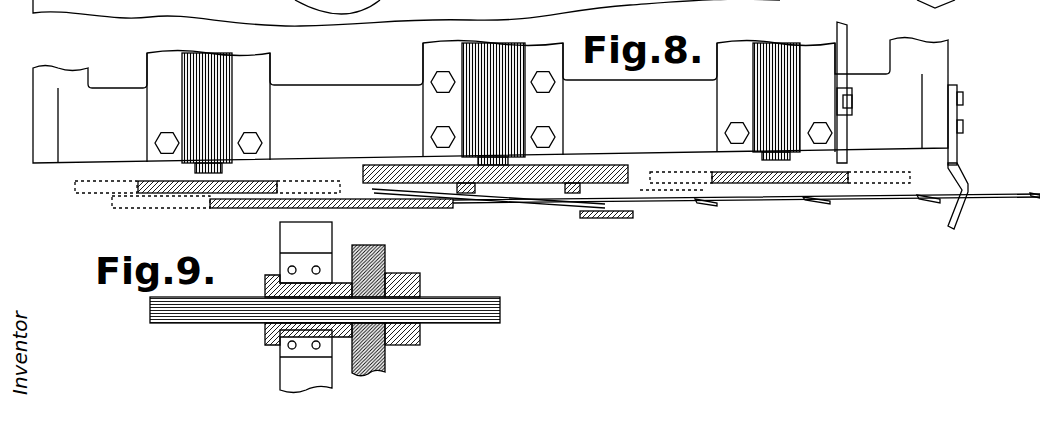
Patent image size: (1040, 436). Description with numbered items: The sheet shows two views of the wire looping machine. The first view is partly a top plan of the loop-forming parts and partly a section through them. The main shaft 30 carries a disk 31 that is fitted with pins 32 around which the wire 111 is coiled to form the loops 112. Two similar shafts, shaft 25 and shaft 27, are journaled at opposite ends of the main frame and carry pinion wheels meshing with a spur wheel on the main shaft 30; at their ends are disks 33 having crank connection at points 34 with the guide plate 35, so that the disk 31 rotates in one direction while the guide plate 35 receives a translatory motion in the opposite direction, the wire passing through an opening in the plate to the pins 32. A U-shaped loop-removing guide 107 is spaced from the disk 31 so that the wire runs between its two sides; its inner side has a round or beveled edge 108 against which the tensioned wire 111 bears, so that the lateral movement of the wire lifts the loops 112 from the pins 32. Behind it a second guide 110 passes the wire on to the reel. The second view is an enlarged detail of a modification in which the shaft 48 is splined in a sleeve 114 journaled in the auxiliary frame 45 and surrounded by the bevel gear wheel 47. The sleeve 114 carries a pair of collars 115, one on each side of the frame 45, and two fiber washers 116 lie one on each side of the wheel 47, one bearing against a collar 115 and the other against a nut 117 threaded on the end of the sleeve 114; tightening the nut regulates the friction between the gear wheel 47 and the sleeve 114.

In FIG. 8, the shaft 25 is at (192, 165).
In FIG. 8, the shaft 27 is at (740, 152).
In FIG. 8, the main shaft 30 is at (510, 164).
In FIG. 8, the disk 31 is at (418, 172).
In FIG. 8, the pins 32 is at (466, 194).
In FIG. 8, the disks 33 is at (187, 188).
In FIG. 8, the crank connection points 34 is at (130, 198).
In FIG. 8, the guide plate 35 is at (398, 208).
In FIG. 9, the auxiliary frame 45 is at (306, 307).
In FIG. 9, the bevel gear wheel 47 is at (387, 257).
In FIG. 9, the shaft 48 is at (190, 312).
In FIG. 8, the loop-removing guide 107 is at (612, 219).
In FIG. 8, the round or beveled edge 108 is at (580, 205).
In FIG. 8, the second guide 110 is at (962, 183).
In FIG. 8, the wire 111 is at (897, 201).
In FIG. 8, the loops 112 is at (823, 202).
In FIG. 9, the sleeve 114 is at (272, 332).
In FIG. 9, the collars 115 is at (278, 277).
In FIG. 9, the washers 116 is at (386, 352).
In FIG. 9, the nut 117 is at (420, 283).